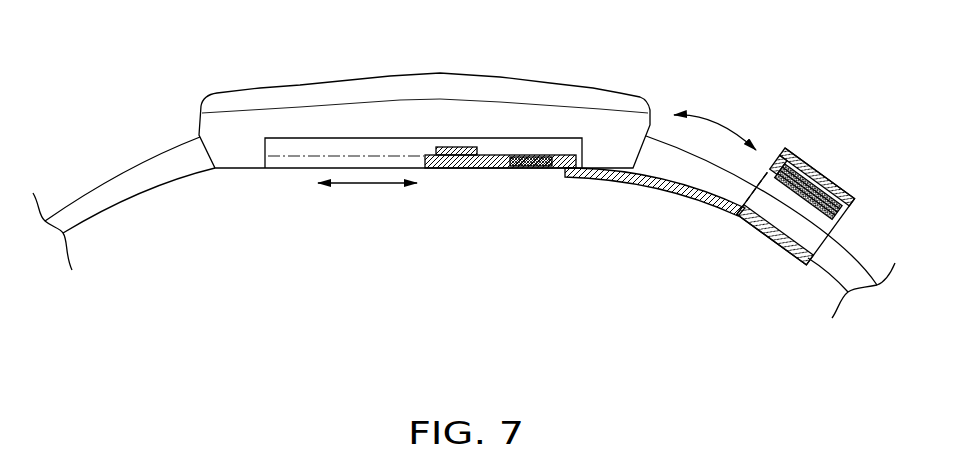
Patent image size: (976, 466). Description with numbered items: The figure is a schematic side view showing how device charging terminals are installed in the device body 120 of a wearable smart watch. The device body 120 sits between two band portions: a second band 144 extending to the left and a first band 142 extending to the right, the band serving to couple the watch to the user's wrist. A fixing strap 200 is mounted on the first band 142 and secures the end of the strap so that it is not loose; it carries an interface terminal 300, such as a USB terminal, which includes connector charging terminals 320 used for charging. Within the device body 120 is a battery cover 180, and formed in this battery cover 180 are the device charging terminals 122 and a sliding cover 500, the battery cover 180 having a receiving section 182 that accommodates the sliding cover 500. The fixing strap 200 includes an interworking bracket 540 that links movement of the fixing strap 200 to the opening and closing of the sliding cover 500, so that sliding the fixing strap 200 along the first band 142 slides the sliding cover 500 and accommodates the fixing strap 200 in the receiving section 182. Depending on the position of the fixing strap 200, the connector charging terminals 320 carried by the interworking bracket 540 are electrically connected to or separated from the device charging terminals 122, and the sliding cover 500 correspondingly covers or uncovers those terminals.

The device body 120 is at (240, 82).
The device charging terminals 122 is at (450, 144).
The first band 142 is at (843, 258).
The second band 144 is at (113, 182).
The battery cover 180 is at (372, 139).
The receiving section 182 is at (285, 162).
The fixing strap 200 is at (839, 170).
The interface terminal 300 is at (812, 163).
The connector charging terminals 320 is at (530, 170).
The sliding cover 500 is at (472, 169).
The interworking bracket 540 is at (693, 203).